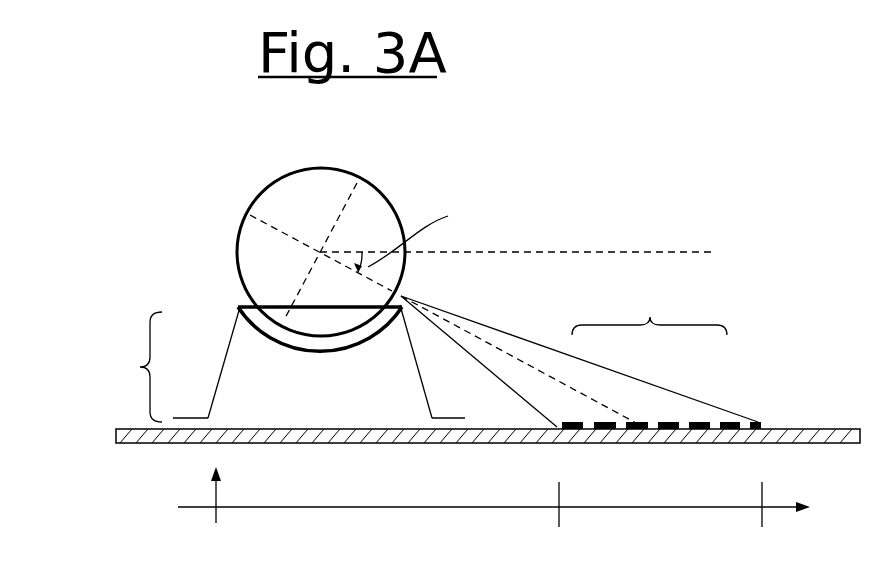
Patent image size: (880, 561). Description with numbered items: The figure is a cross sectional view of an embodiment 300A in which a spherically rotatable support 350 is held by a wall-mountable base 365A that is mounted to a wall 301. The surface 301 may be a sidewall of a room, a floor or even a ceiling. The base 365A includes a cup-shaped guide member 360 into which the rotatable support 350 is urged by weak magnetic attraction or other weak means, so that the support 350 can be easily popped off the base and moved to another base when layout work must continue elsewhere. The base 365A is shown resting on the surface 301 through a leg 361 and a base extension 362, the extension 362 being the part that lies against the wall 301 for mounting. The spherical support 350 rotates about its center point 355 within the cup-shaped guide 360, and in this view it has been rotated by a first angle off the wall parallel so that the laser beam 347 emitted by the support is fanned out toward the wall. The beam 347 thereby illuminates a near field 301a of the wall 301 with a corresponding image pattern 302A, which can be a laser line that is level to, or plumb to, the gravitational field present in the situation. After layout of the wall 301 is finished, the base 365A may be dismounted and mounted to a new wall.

The optical inspection system 300A is at (127, 77).
The wall 301 is at (648, 443).
The near field 301a is at (649, 299).
The image pattern 302A is at (655, 422).
The illumination beam 347 is at (457, 312).
The spherically rotatable support 350 is at (390, 200).
The lens center / optical axes 355 is at (316, 250).
The cup-shaped guide member 360 is at (298, 348).
The support leg 361 is at (225, 377).
The support foot 362 is at (190, 417).
The wall-mountable base 365A is at (277, 363).